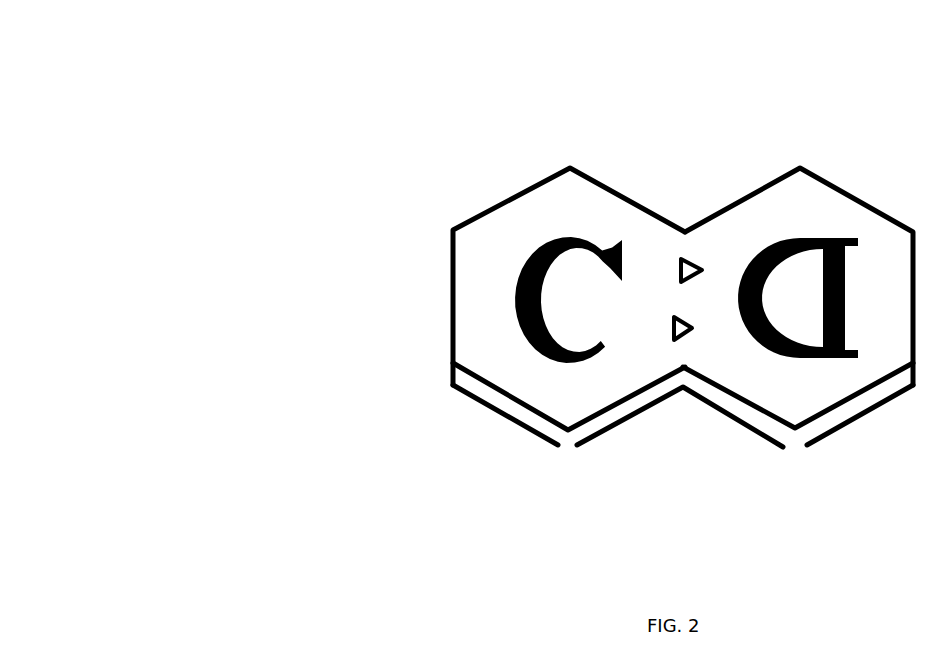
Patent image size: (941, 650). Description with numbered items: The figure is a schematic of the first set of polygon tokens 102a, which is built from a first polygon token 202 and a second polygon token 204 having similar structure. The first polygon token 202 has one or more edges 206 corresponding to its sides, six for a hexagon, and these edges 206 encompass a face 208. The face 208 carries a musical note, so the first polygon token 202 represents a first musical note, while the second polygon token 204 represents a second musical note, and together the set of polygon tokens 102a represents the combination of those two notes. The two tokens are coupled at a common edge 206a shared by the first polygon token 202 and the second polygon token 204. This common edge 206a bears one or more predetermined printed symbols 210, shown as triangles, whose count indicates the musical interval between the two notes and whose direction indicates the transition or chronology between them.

The first set of polygon tokens 102a is at (170, 100).
The first polygon token 202 is at (454, 228).
The second polygon token 204 is at (858, 200).
The edges 206 is at (476, 389).
The common edge 206a is at (686, 243).
The face 208 is at (477, 323).
The predetermined printed symbols 210 is at (677, 345).